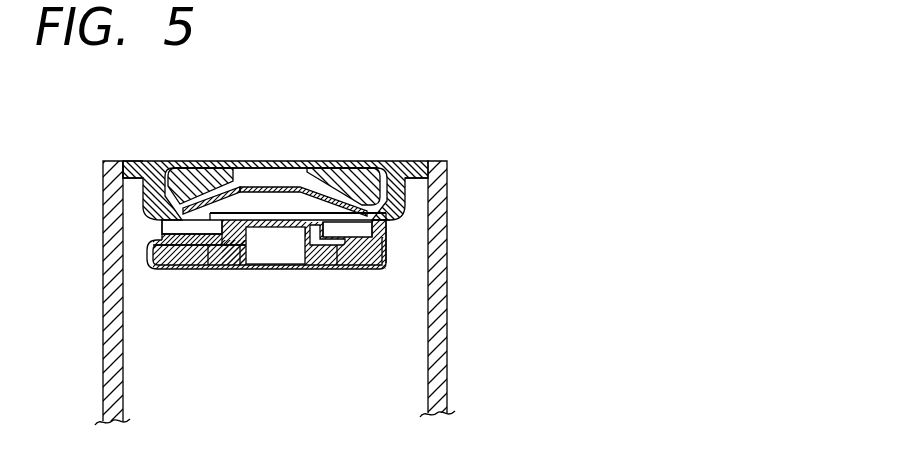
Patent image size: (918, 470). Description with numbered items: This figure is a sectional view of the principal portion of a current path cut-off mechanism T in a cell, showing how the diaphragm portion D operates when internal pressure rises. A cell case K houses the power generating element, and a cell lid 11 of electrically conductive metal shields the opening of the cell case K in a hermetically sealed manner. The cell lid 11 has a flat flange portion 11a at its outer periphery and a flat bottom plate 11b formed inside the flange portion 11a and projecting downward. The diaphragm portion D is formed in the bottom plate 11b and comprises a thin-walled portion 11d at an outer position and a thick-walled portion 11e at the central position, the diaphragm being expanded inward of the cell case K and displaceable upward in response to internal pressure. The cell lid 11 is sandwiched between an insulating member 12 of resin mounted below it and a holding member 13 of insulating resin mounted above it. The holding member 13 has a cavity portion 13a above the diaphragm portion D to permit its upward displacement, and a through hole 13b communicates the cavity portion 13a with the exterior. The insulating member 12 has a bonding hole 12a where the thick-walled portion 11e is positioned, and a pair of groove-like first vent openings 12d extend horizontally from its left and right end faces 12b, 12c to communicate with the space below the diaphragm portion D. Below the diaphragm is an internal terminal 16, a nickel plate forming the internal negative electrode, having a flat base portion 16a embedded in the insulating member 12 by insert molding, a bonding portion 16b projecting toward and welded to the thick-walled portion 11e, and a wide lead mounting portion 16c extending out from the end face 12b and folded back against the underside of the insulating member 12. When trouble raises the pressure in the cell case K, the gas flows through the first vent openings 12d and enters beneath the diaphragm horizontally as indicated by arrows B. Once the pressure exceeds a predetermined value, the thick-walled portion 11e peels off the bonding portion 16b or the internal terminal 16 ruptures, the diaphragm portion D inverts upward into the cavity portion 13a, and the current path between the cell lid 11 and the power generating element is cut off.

The current path cut-off mechanism T is at (100, 150).
The cell case K is at (103, 292).
The cell lid 11 is at (422, 153).
The flange portion 11a is at (131, 163).
The bottom plate 11b is at (340, 221).
The thin-walled portion 11d is at (205, 168).
The thick-walled portion 11e is at (281, 168).
The insulating member 12 is at (400, 252).
The bonding hole 12a is at (290, 242).
The end face 12b is at (150, 268).
The end face 12c is at (387, 242).
The first vent openings 12d is at (382, 216).
The holding member 13 is at (180, 168).
The cavity portion 13a is at (297, 187).
The through hole 13b is at (250, 186).
The internal terminal 16 is at (238, 272).
The base portion 16a is at (206, 268).
The bonding portion 16b is at (274, 258).
The lead mounting portion 16c is at (233, 280).
The arrows B is at (150, 228).
The diaphragm portion D is at (262, 182).